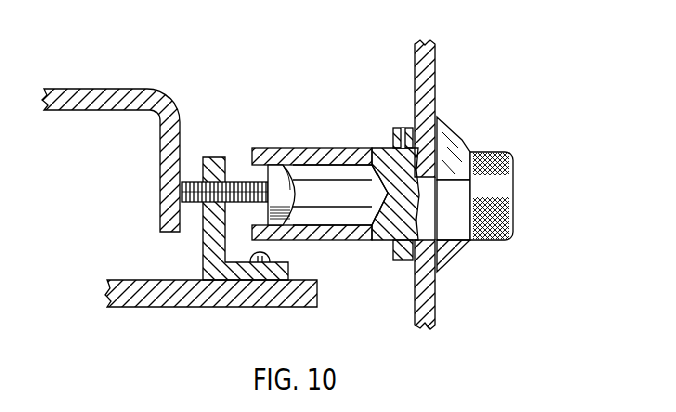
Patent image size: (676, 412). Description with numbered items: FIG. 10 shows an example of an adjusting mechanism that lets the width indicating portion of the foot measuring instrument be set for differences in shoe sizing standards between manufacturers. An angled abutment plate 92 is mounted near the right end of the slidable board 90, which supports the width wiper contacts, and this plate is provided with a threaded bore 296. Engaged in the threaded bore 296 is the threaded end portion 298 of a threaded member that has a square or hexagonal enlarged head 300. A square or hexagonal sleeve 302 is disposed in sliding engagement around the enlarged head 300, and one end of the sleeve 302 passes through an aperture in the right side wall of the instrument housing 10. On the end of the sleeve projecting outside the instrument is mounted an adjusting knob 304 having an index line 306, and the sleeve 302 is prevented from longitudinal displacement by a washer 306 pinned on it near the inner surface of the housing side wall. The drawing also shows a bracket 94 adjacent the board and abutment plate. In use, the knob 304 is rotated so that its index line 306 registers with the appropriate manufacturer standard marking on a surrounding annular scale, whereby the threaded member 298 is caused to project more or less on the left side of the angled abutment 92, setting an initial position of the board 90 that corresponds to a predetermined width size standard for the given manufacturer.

The instrument housing 10 is at (438, 83).
The slidable board 90 is at (282, 303).
The angled abutment plate 92 is at (203, 262).
The angle bracket 94 is at (158, 170).
The threaded bore 296 is at (233, 180).
The threaded end portion 298 is at (242, 177).
The enlarged head 300 is at (290, 148).
The sleeve 302 is at (352, 240).
The adjusting knob 304 is at (488, 243).
The washer 306 is at (393, 127).